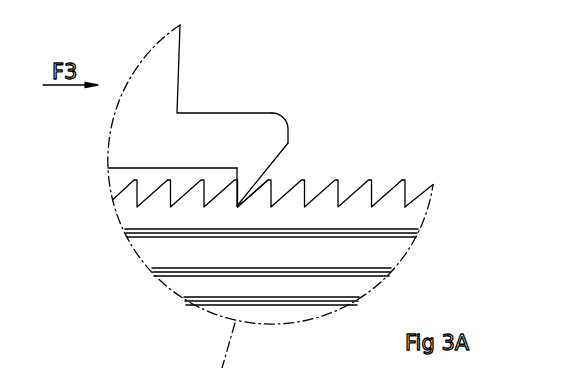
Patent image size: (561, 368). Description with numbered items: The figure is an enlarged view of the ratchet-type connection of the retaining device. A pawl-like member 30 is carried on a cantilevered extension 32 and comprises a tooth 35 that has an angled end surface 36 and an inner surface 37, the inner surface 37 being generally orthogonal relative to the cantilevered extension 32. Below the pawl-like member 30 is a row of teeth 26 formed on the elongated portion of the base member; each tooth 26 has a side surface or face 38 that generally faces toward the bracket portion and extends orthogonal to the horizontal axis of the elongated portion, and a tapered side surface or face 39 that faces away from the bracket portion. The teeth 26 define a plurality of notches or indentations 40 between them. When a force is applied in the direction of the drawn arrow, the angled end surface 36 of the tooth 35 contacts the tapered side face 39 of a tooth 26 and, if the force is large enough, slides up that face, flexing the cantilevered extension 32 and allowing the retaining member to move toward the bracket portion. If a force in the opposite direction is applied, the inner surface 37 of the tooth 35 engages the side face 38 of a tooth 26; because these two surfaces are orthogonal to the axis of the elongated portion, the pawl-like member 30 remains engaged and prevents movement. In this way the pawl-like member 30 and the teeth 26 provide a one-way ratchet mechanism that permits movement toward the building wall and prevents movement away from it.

The teeth 26 is at (402, 180).
The pawl-like member 30 is at (289, 156).
The cantilevered extension 32 is at (198, 113).
The tooth 35 is at (244, 167).
The angled end surface 36 is at (263, 170).
The inner surface 37 is at (237, 172).
The side surface or face 38 is at (432, 184).
The tapered side surface or face 39 is at (392, 180).
The notches or indentations 40 is at (150, 196).